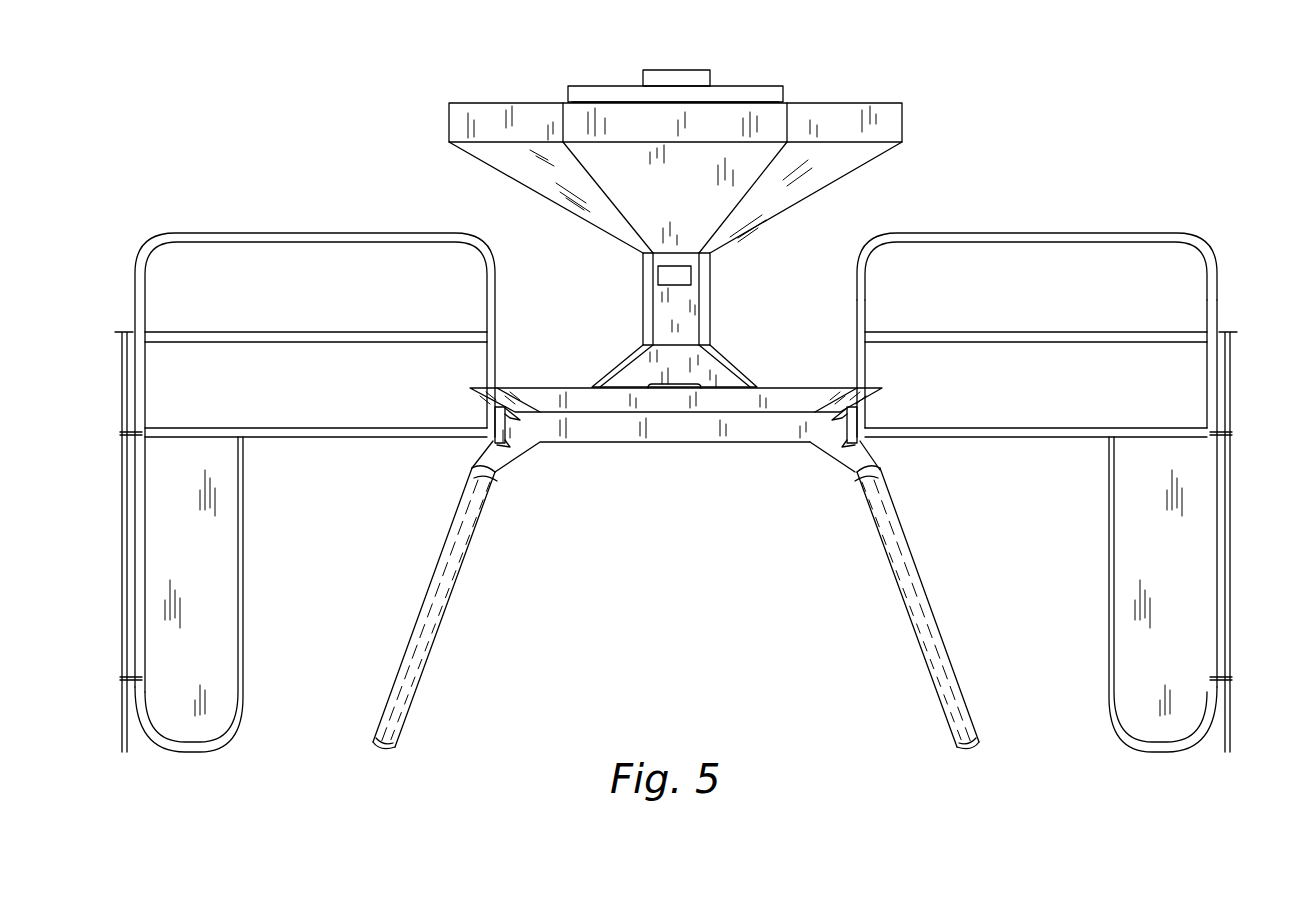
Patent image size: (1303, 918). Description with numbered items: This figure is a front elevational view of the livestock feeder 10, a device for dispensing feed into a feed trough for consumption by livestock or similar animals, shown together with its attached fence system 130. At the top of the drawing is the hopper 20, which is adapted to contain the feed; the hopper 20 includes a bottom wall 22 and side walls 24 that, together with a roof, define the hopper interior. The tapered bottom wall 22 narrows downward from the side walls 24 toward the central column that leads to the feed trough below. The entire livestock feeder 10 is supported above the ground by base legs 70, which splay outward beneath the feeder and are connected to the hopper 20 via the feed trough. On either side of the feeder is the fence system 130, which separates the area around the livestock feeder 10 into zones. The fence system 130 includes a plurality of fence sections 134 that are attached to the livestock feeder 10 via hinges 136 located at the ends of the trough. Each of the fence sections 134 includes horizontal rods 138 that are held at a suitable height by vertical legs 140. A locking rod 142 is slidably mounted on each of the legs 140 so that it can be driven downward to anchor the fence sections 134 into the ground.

The livestock feeder 10 is at (996, 94).
The hopper 20 is at (449, 123).
The bottom wall 22 is at (558, 185).
The side walls 24 is at (902, 125).
The base legs 70 is at (438, 608).
The fence system 130 is at (1060, 184).
The fence sections 134 is at (1078, 233).
The hinges 136 is at (856, 401).
The horizontal rods 138 is at (1153, 330).
The vertical legs 140 is at (1210, 503).
The locking rod 142 is at (1228, 588).